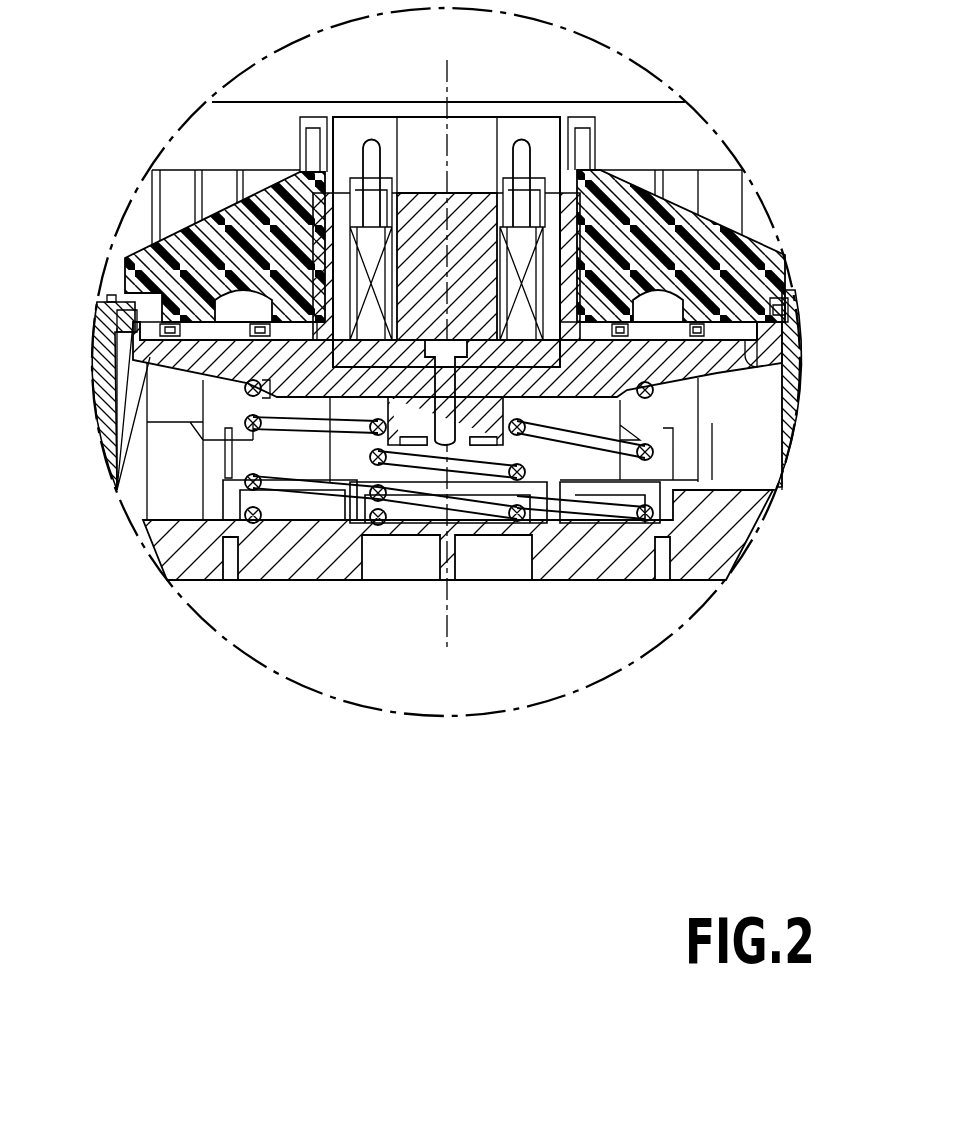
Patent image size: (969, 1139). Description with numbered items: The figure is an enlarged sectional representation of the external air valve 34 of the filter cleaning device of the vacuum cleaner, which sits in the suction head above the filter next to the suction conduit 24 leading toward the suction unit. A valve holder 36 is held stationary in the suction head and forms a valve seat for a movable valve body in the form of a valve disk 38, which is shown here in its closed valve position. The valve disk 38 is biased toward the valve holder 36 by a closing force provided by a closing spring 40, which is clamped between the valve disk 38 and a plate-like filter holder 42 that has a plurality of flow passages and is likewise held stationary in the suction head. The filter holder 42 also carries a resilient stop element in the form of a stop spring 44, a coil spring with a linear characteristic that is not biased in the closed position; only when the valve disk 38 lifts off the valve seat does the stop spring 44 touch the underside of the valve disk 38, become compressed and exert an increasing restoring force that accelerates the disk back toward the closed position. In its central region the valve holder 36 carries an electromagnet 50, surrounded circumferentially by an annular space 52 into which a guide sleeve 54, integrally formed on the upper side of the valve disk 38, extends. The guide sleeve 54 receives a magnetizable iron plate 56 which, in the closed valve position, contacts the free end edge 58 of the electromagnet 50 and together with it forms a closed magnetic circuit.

The suction conduit 24 is at (167, 475).
The external air valve 34 is at (747, 223).
The valve holder 36 is at (760, 270).
The valve disk 38 is at (545, 370).
The closing spring 40 is at (615, 520).
The filter holder 42 is at (722, 555).
The stop spring 44 is at (410, 515).
The electromagnet 50 is at (520, 243).
The annular space 52 is at (197, 218).
The guide sleeve 54 is at (150, 260).
The iron plate 56 is at (350, 353).
The free end edge 58 is at (717, 375).